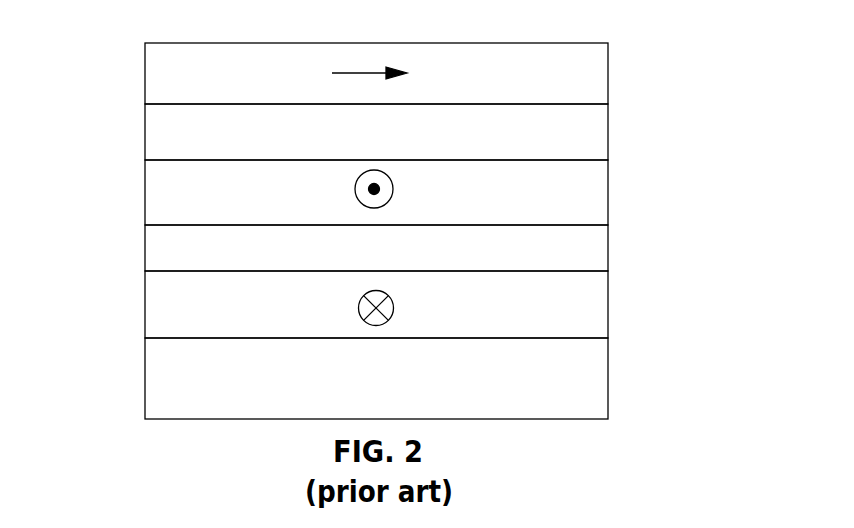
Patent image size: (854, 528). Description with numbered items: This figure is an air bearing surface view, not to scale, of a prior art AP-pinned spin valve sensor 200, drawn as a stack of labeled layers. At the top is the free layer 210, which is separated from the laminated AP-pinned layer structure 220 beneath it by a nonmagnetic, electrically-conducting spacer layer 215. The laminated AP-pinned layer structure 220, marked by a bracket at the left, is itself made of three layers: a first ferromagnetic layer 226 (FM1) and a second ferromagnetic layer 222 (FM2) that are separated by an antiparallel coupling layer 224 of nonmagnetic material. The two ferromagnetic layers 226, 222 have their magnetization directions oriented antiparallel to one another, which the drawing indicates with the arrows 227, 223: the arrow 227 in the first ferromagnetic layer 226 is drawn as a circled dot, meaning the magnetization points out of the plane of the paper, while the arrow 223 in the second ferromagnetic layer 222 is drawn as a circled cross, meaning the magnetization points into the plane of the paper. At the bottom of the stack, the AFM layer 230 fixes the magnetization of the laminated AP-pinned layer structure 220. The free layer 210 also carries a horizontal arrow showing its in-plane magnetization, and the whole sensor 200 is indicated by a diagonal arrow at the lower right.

The AP-pinned SV sensor 200 is at (404, 275).
The free layer 210 is at (595, 84).
The spacer layer 215 is at (595, 138).
The laminated AP-pinned layer structure 220 is at (384, 248).
The second ferromagnetic layer 222 is at (420, 304).
The arrow 223 is at (394, 311).
The antiparallel coupling layer 224 is at (592, 253).
The first ferromagnetic layer 226 is at (423, 192).
The arrow 227 is at (393, 187).
The AFM layer 230 is at (592, 376).